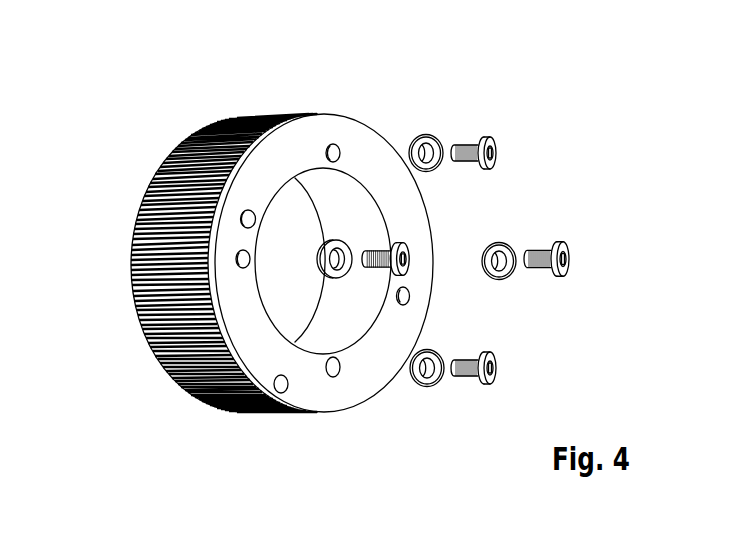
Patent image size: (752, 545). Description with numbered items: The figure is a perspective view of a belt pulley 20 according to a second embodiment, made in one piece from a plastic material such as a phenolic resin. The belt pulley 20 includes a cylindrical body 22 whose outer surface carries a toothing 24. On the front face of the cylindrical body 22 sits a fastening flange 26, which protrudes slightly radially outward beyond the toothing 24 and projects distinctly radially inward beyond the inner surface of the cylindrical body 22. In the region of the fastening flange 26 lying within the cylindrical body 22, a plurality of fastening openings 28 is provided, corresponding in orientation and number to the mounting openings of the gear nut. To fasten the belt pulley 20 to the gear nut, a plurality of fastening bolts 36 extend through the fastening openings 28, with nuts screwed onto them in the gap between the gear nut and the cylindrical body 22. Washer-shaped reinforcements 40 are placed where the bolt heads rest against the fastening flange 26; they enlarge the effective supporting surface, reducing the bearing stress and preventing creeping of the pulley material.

The belt pulley 20 is at (326, 82).
The cylindrical body 22 is at (340, 334).
The toothing 24 is at (135, 232).
The fastening flange 26 is at (328, 397).
The fastening openings 28 is at (338, 149).
The fastening bolts 36 is at (404, 275).
The reinforcements 40 is at (322, 257).